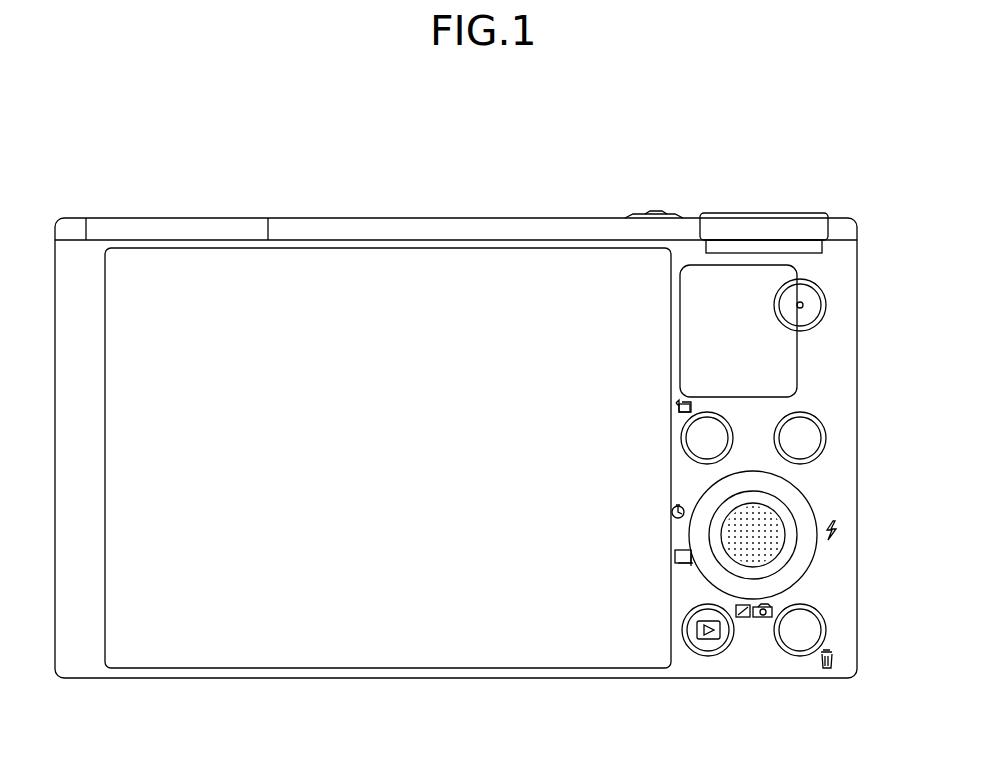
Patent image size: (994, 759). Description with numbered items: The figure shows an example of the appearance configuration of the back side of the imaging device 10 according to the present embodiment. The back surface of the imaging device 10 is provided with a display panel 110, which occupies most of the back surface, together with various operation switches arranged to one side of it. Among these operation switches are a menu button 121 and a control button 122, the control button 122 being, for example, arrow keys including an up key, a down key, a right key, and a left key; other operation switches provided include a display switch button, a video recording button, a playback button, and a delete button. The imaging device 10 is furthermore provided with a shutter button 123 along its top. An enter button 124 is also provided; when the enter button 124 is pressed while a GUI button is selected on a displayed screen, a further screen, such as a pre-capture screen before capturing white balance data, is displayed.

The imaging device 10 is at (793, 128).
The display panel 110 is at (196, 652).
The menu button 121 is at (826, 438).
The control button 122 is at (800, 577).
The shutter button 123 is at (660, 212).
The enter button 124 is at (783, 540).